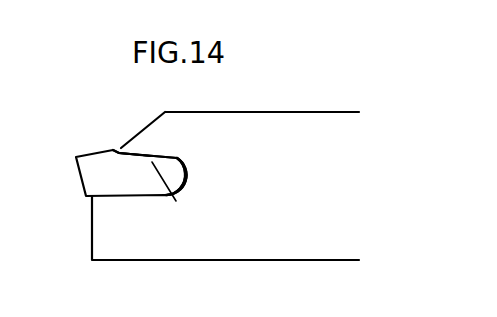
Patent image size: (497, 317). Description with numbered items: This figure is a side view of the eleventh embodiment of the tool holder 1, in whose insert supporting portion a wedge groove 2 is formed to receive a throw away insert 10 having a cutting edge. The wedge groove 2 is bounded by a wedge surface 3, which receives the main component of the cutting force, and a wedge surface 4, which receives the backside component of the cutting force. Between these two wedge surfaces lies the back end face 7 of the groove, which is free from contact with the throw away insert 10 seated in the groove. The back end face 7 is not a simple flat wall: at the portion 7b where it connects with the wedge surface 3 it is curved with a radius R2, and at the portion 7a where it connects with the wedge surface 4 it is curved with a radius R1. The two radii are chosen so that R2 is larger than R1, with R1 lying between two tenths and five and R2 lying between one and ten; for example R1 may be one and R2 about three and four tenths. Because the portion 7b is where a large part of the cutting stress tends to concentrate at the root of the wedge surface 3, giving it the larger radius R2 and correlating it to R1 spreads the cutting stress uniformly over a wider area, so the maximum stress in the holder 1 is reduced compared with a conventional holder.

The holder 1 is at (275, 112).
The wedge groove 2 is at (162, 157).
The wedge surface 3 is at (108, 195).
The wedge surface 4 is at (132, 154).
The back end face 7 is at (181, 181).
The portion 7a is at (184, 166).
The portion 7b is at (162, 195).
The throw away insert 10 is at (87, 154).
The radius R1 is at (188, 160).
The radius R2 is at (175, 200).